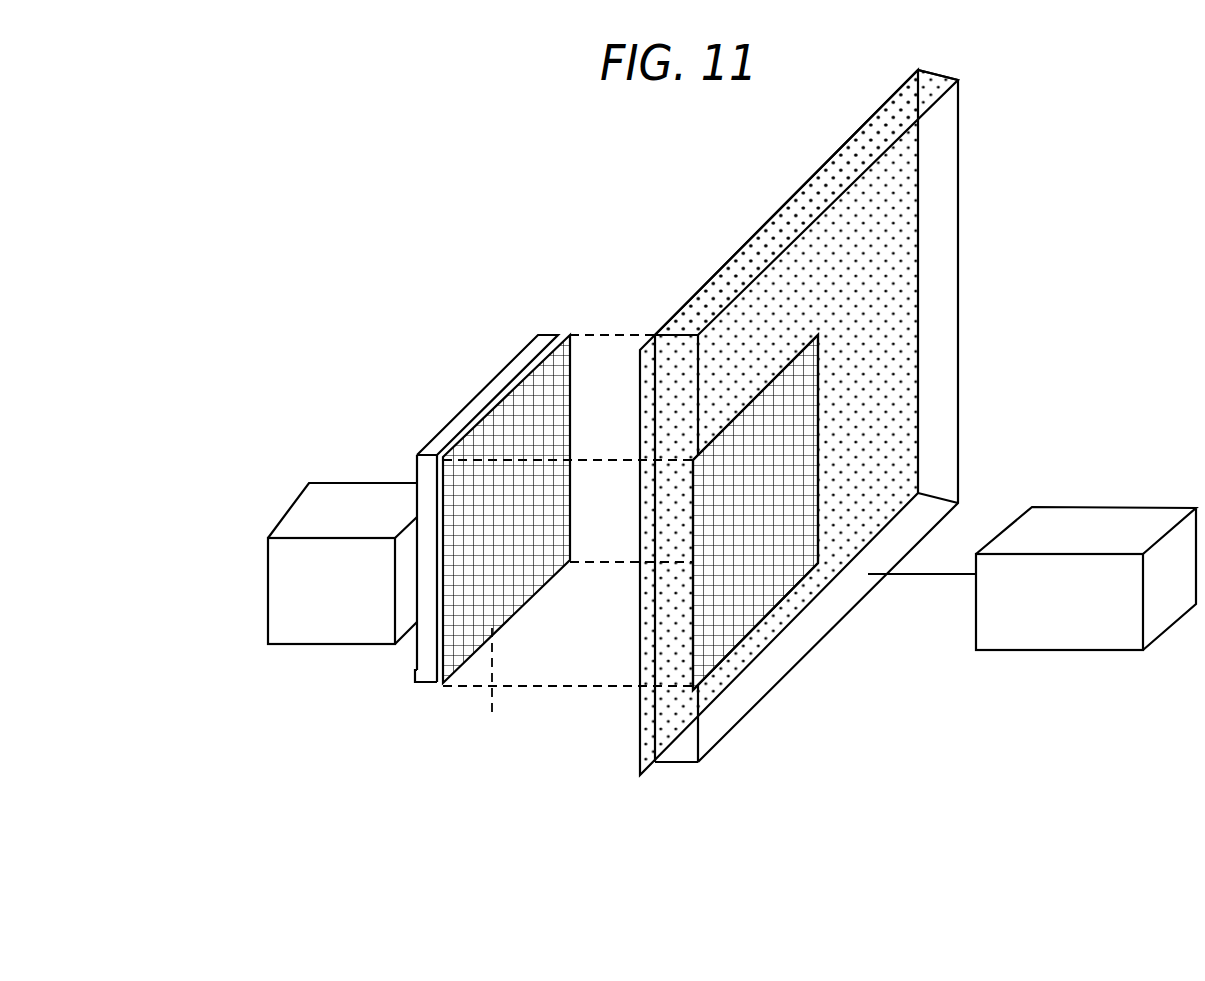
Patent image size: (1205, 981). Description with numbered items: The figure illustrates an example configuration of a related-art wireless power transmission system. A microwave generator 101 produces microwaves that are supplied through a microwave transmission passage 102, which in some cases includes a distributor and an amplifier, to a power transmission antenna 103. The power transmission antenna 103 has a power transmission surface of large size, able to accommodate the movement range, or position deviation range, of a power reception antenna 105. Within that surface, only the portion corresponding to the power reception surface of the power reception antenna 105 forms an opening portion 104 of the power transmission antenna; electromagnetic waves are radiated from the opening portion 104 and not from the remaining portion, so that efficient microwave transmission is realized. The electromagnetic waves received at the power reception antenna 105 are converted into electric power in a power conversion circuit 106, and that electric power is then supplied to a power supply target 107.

The microwave generator 101 is at (1099, 532).
The microwave transmission passage 102 is at (905, 575).
The power transmission antenna 103 is at (845, 150).
The opening portion 104 is at (722, 643).
The power reception antenna 105 is at (497, 402).
The power conversion circuit 106 is at (415, 670).
The power supply target 107 is at (305, 553).